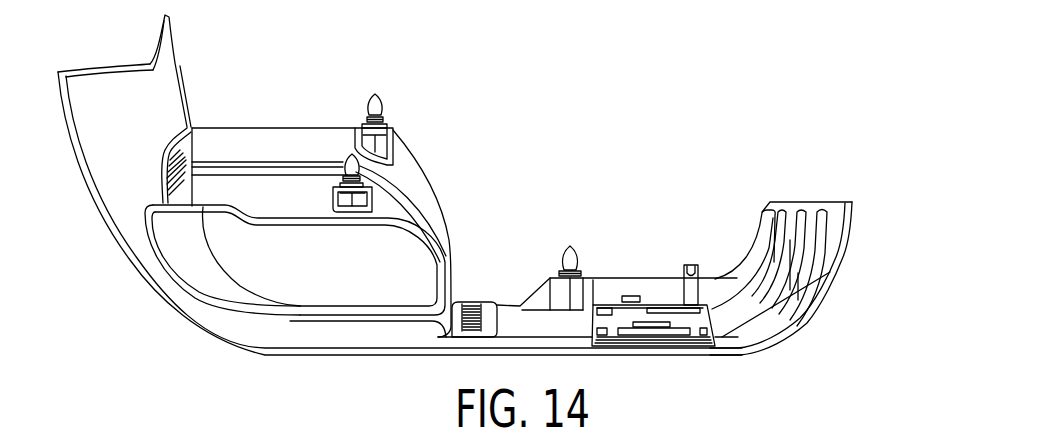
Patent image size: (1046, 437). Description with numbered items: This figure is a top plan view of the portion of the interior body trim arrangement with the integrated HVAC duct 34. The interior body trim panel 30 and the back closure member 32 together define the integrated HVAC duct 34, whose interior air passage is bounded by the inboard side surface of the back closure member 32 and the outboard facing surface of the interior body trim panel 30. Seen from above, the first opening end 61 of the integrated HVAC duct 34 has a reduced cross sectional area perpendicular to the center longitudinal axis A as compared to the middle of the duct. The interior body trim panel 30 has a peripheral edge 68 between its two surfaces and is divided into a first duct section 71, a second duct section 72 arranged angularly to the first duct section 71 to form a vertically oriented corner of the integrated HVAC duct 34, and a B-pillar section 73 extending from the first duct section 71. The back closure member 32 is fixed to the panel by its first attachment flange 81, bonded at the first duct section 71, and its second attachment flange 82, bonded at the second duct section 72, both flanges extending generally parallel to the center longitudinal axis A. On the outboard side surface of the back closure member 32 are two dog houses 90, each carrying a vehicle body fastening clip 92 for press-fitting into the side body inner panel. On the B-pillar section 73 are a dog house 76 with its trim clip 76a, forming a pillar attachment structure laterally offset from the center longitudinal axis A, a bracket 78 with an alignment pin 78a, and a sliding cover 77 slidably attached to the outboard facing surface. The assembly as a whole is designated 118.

The lamp assembly 118 is at (697, 126).
The second duct section 72 is at (104, 231).
The peripheral edge 68 is at (174, 52).
The second attachment flange 82 is at (183, 147).
The back closure member 32 is at (442, 182).
The integrated HVAC duct 34 is at (220, 270).
The center longitudinal axis A is at (306, 263).
The first opening end 61 is at (410, 223).
The vehicle body fastening clip 92 is at (348, 156).
The dog house 90 is at (372, 191).
The first attachment flange 81 is at (483, 305).
The first duct section 71 is at (290, 355).
The interior body trim panel 30 is at (412, 364).
The trim clip 76a is at (570, 247).
The dog house 76 is at (585, 293).
The sliding cover 77 is at (620, 348).
The bracket 78 is at (657, 302).
The alignment pin 78a is at (706, 286).
The B-pillar section 73 is at (700, 353).